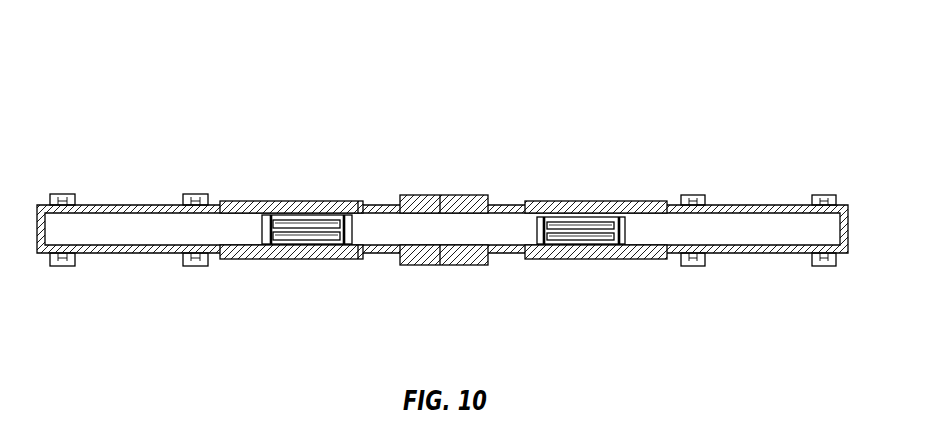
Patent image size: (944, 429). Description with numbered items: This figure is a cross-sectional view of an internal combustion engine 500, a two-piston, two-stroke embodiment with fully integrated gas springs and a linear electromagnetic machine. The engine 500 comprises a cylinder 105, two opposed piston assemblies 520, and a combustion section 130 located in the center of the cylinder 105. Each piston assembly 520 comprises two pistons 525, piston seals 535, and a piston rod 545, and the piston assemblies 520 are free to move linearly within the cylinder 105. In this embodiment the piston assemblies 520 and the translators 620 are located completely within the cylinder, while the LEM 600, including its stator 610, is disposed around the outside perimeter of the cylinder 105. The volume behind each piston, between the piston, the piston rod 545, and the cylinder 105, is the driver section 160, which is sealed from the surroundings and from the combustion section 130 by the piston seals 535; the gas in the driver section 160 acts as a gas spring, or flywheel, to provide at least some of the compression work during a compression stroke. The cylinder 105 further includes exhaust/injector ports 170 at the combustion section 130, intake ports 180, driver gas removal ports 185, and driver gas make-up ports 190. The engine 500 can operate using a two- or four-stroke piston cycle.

The internal combustion engine 500 is at (126, 46).
The cylinder 105 is at (497, 205).
The combustion section 130 is at (425, 226).
The driver section 160 is at (725, 228).
The exhaust/injector ports 170 is at (440, 212).
The intake ports 180 is at (697, 197).
The driver gas removal ports 185 is at (823, 196).
The driver gas make-up ports 190 is at (822, 267).
The LEM 600 is at (363, 140).
The stator 610 is at (255, 201).
The translator 620 is at (292, 219).
The piston 525 is at (363, 201).
The piston assembly 520 is at (352, 305).
The piston seals 535 is at (270, 244).
The piston rod 545 is at (320, 229).